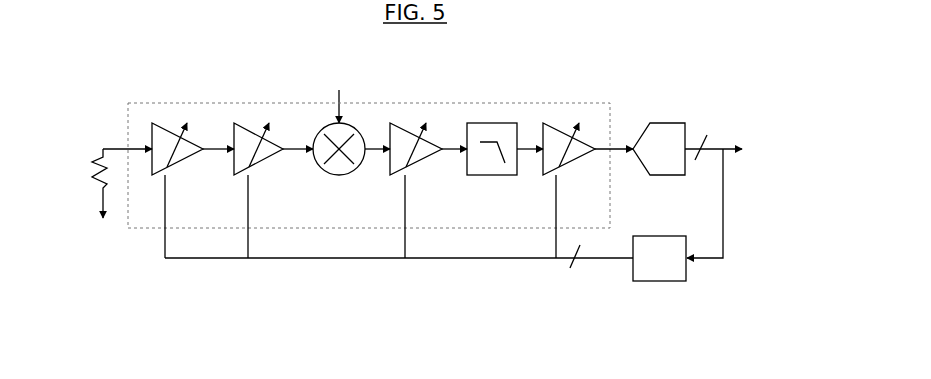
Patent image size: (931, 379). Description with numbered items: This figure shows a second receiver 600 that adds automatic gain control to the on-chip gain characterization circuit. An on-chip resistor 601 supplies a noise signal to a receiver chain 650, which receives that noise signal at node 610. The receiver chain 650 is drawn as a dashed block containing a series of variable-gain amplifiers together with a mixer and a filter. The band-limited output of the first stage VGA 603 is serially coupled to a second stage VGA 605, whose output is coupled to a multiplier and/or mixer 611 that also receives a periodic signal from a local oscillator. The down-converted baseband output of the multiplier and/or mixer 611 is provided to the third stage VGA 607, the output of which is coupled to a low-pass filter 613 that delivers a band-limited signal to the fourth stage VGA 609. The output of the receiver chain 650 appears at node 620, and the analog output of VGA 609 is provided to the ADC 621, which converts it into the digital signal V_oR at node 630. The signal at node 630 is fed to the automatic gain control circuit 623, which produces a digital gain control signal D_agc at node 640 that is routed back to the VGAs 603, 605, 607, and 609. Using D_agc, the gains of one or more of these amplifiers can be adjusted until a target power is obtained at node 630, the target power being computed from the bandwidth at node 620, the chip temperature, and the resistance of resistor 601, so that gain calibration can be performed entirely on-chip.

The second receiver 600 is at (684, 60).
The on-chip resistor 601 is at (92, 175).
The first stage VGA 603 is at (191, 166).
The second stage VGA 605 is at (275, 157).
The third stage VGA 607 is at (430, 158).
The fourth stage VGA 609 is at (582, 160).
The node 610 is at (110, 147).
The multiplier and/or mixer 611 is at (337, 178).
The low-pass filter 613 is at (487, 177).
The node 620 is at (620, 142).
The ADC 621 is at (665, 178).
The automatic gain control circuit 623 is at (687, 270).
The node 630 is at (722, 138).
The node 640 is at (555, 262).
The receiver chain 650 is at (525, 103).